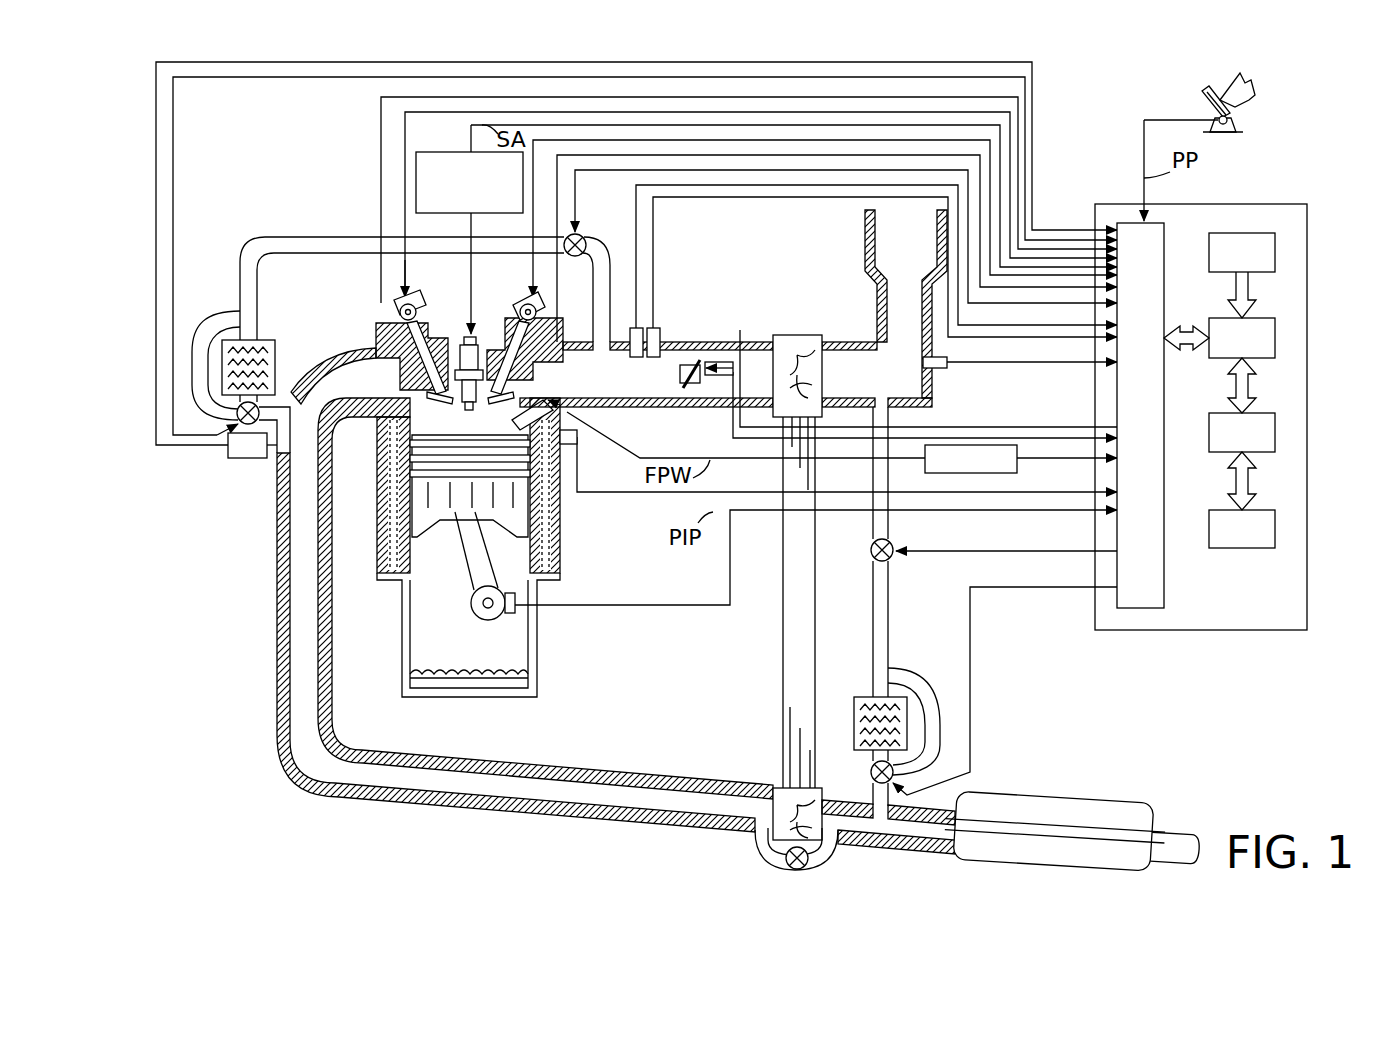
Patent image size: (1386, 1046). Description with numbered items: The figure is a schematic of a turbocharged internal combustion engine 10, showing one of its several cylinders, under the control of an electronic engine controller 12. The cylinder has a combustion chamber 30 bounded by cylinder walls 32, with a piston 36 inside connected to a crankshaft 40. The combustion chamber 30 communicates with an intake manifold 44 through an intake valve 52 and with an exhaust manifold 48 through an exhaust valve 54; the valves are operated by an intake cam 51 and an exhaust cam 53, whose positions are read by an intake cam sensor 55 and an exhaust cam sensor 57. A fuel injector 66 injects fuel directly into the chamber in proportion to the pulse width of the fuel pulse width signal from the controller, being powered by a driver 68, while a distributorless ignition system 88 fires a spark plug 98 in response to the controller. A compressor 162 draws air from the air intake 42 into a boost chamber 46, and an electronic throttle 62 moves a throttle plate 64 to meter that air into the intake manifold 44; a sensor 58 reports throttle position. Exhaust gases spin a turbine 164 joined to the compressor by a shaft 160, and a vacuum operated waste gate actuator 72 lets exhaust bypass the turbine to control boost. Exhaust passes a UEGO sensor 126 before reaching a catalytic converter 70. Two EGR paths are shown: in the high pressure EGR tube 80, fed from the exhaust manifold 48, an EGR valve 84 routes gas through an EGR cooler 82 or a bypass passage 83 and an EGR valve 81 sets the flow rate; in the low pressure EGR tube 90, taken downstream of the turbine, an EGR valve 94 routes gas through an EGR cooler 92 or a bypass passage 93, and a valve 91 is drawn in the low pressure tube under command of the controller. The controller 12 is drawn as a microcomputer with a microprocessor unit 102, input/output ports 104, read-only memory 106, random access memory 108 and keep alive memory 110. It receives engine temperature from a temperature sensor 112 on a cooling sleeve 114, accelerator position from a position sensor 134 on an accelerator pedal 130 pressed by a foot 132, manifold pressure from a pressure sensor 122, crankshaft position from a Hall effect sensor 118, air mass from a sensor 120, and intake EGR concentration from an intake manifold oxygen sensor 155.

The internal combustion engine 10 is at (292, 142).
The electronic engine controller 12 is at (1301, 204).
The combustion chamber 30 is at (470, 547).
The cylinder walls 32 is at (413, 538).
The piston 36 is at (470, 519).
The crankshaft 40 is at (471, 606).
The air intake 42 is at (895, 255).
The intake manifold 44 is at (595, 389).
The intake boost chamber 46 is at (743, 389).
The exhaust manifold 48 is at (335, 394).
The intake cam 51 is at (541, 322).
The intake valve 52 is at (500, 398).
The exhaust cam 53 is at (452, 330).
The exhaust valve 54 is at (392, 372).
The intake cam sensor 55 is at (540, 317).
The exhaust cam sensor 57 is at (400, 316).
The throttle position sensor 58 is at (740, 360).
The electronic throttle 62 is at (687, 345).
The throttle plate 64 is at (702, 360).
The fuel injector 66 is at (718, 435).
The driver 68 is at (1017, 470).
The catalytic converter 70 is at (955, 859).
The vacuum operated waste gate actuator 72 is at (778, 867).
The high pressure EGR tube 80 is at (313, 237).
The EGR valve 81 is at (576, 233).
The EGR cooler 82 is at (272, 340).
The bypass passage 83 is at (204, 328).
The EGR valve 84 is at (262, 410).
The distributorless ignition system 88 is at (436, 152).
The low pressure EGR tube 90 is at (873, 546).
The exhaust valve 91 is at (893, 548).
The EGR cooler 92 is at (862, 697).
The bypass passage 93 is at (908, 677).
The EGR valve 94 is at (871, 773).
The spark plug 98 is at (473, 330).
The microprocessor unit 102 is at (1275, 334).
The input/output ports 104 is at (1165, 226).
The read-only memory 106 is at (1275, 251).
The random access memory 108 is at (1275, 433).
The keep alive memory 110 is at (1275, 526).
The temperature sensor 112 is at (567, 470).
The cooling sleeve 114 is at (560, 517).
The Hall effect sensor 118 is at (504, 616).
The air mass sensor 120 is at (947, 366).
The pressure sensor 122 is at (657, 325).
The Universal Exhaust Gas Oxygen sensor 126 is at (240, 458).
The accelerator pedal 130 is at (1242, 105).
The foot 132 is at (1250, 88).
The position sensor 134 is at (1238, 123).
The intake manifold oxygen sensor 155 is at (631, 340).
The shaft 160 is at (783, 636).
The compressor 162 is at (800, 335).
The turbine 164 is at (773, 795).